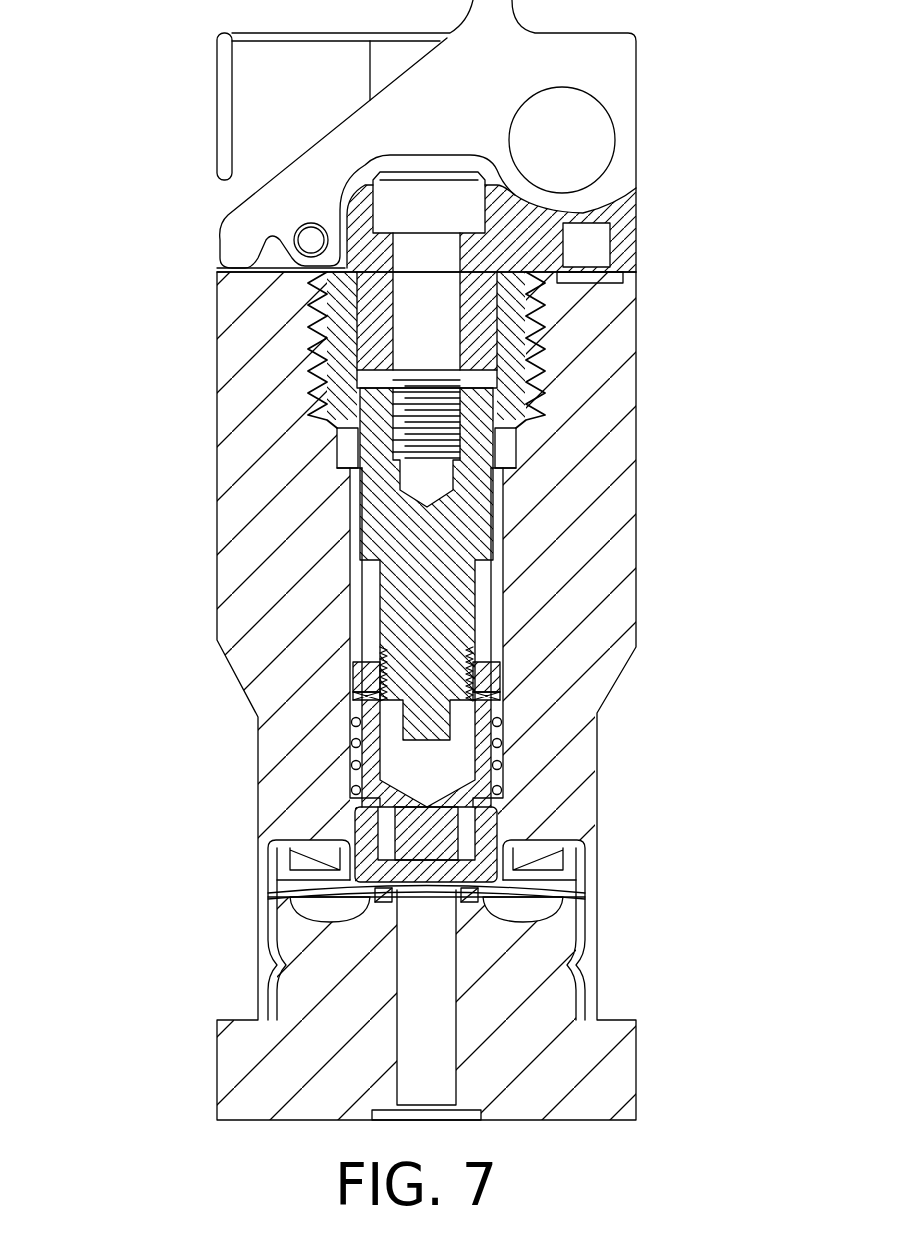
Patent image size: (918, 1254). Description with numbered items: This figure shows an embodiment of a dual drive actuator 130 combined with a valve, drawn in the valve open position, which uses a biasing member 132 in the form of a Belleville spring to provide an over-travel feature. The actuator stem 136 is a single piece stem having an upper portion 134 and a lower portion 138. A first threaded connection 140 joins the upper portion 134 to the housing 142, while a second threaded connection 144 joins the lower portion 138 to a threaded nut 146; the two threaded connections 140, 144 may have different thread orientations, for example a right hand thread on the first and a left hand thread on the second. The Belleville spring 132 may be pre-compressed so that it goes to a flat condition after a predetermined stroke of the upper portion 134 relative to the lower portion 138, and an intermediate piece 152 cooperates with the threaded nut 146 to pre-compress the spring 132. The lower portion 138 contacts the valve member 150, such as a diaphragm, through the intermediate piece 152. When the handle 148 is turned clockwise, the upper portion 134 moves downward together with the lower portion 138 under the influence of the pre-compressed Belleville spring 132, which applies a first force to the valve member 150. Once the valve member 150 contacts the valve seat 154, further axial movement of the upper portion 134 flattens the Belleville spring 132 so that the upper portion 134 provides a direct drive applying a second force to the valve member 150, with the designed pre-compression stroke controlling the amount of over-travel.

The dual drive actuator 130 is at (212, 636).
The biasing member 132 is at (505, 690).
The upper portion 134 is at (468, 533).
The actuator stem 136 is at (508, 610).
The lower portion 138 is at (405, 722).
The first threaded connection 140 is at (556, 362).
The housing 142 is at (255, 430).
The second threaded connection 144 is at (352, 690).
The threaded nut 146 is at (378, 679).
The handle 148 is at (217, 150).
The valve member 150 is at (503, 896).
The intermediate piece 152 is at (503, 797).
The valve seat 154 is at (385, 898).